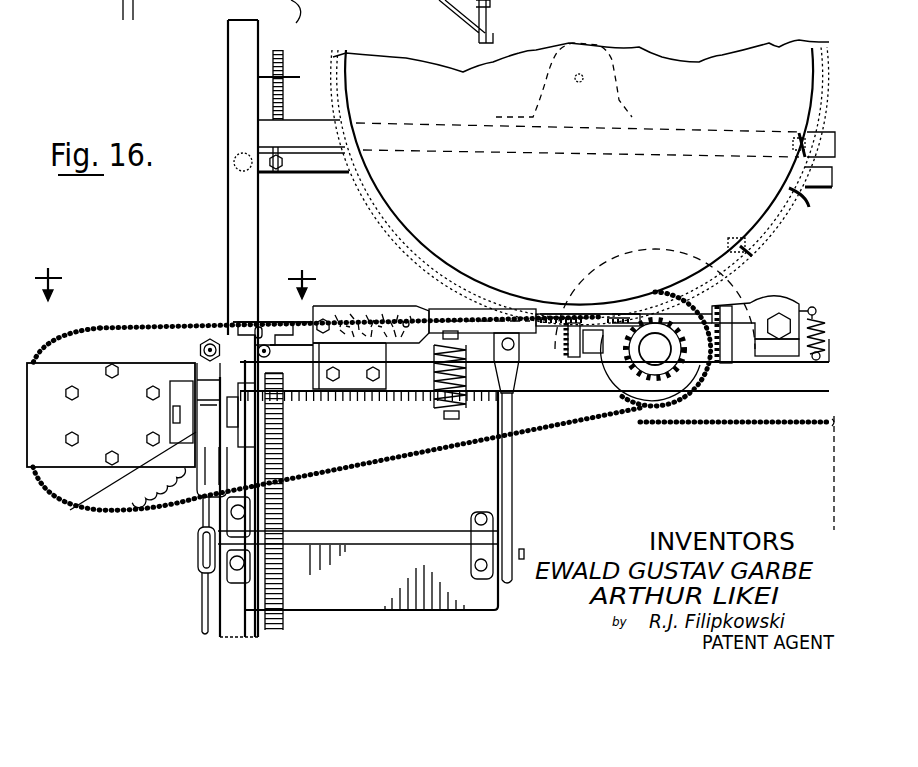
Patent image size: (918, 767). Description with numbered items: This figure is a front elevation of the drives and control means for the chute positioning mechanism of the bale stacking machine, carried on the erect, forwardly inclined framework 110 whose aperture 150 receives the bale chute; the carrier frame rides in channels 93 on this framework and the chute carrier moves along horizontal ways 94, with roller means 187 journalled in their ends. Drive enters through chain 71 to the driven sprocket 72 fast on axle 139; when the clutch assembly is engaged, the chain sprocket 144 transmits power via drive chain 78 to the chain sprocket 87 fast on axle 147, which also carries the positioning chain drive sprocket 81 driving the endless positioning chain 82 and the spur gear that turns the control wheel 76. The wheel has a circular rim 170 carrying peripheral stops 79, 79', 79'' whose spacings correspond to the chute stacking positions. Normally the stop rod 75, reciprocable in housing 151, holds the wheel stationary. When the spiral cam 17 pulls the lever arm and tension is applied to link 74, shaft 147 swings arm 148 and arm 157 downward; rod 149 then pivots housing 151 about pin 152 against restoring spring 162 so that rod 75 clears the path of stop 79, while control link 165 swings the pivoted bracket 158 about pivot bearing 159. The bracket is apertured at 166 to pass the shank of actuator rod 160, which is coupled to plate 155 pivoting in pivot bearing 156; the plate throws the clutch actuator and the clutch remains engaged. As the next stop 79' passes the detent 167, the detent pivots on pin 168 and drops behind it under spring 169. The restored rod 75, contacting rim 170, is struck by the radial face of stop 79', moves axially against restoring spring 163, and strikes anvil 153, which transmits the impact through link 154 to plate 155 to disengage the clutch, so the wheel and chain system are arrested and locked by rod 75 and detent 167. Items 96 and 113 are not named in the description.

The spiral cam 17 is at (177, 272).
The chain 71 is at (284, 496).
The driven sprocket 72 is at (290, 403).
The link 74 is at (200, 600).
The stop rod 75 is at (266, 300).
The control wheel 76 is at (702, 75).
The drive chain 78 is at (553, 428).
The stop 79 is at (636, 315).
The stop 79' is at (722, 228).
The stop 79'' is at (777, 140).
The positioning chain drive sprocket 81 is at (712, 399).
The endless positioning chain 82 is at (750, 427).
The chain sprocket 87 is at (599, 383).
The channels 93 is at (245, 125).
The horizontal ways 94 is at (314, 172).
The bracket 96 is at (258, 77).
The erect framework 110 is at (302, 85).
The housing 113 is at (383, 540).
The axle 139 is at (285, 440).
The chain sprocket 144 is at (133, 335).
The axle 147 is at (656, 349).
The arm 148 is at (509, 585).
The rod 149 is at (511, 476).
The aperture 150 is at (733, 477).
The housing 151 is at (413, 309).
The pin 152 is at (307, 282).
The anvil 153 is at (270, 300).
The link 154 is at (207, 330).
The plate 155 is at (421, 516).
The pivot bearing 156 is at (92, 326).
The arm 157 is at (200, 553).
The pivoted bracket 158 is at (203, 340).
The pivot bearing 159 is at (95, 505).
The actuator rod 160 is at (200, 389).
The restoring spring 162 is at (434, 378).
The restoring spring 163 is at (369, 302).
The control link 165 is at (198, 500).
The aperture 166 is at (208, 333).
The detent 167 is at (720, 311).
The pin 168 is at (808, 310).
The spring 169 is at (829, 362).
The circular rim 170 is at (810, 213).
The roller means 187 is at (236, 168).